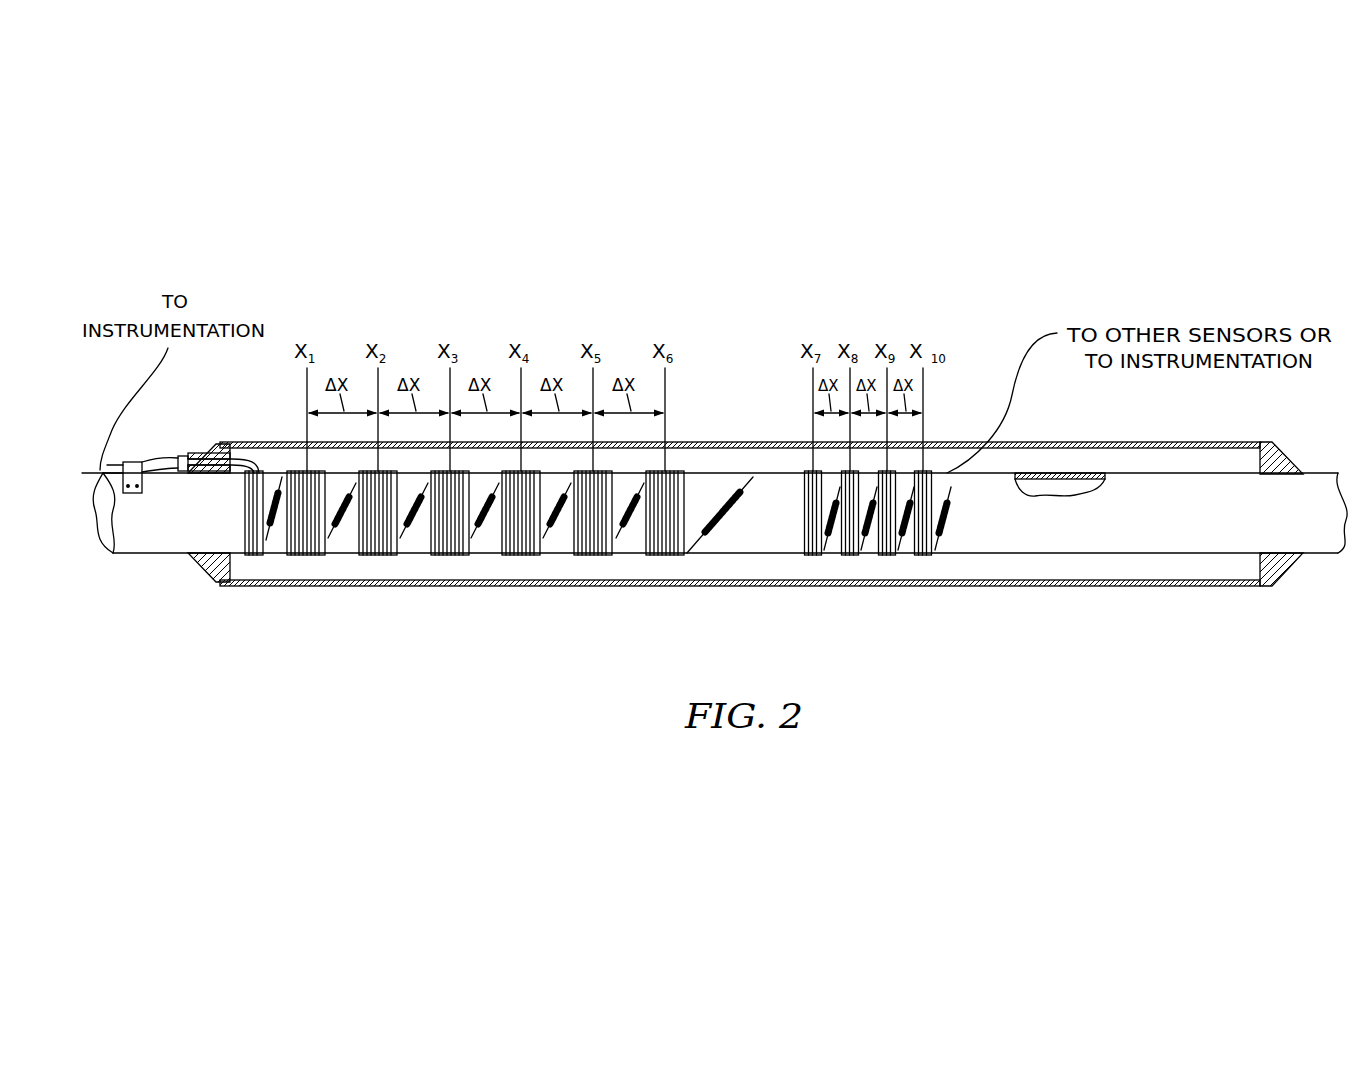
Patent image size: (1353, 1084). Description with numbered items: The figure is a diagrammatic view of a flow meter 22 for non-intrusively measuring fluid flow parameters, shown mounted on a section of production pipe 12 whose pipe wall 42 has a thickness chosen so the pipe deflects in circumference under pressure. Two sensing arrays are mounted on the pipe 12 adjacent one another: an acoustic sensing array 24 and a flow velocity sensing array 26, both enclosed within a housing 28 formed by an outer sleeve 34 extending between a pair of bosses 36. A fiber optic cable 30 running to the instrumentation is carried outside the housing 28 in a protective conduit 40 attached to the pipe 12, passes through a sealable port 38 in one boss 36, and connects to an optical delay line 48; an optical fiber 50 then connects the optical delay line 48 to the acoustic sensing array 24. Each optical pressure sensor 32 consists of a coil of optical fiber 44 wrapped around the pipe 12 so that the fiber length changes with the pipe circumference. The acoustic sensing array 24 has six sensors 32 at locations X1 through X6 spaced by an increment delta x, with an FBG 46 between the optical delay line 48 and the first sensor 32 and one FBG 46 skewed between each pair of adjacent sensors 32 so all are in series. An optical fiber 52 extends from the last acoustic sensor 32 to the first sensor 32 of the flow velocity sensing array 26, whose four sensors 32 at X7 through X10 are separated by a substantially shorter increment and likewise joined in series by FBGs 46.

The pipe 12 is at (115, 550).
The flow meter 22 is at (724, 342).
The acoustic sensing array 24 is at (460, 560).
The flow velocity sensing array 26 is at (870, 566).
The housing 28 is at (602, 590).
The fiber optic cable 30 is at (92, 470).
The optical pressure sensor 32 is at (363, 560).
The outer sleeve 34 is at (1058, 587).
The boss 36 is at (203, 577).
The sealable port 38 is at (188, 456).
The protective conduit 40 is at (165, 457).
The pipe wall 42 is at (1087, 477).
The coil of optical fiber 44 is at (373, 556).
The FBG 46 is at (272, 471).
The optical delay line 48 is at (253, 556).
The optical fiber 50 is at (275, 556).
The optical fiber 52 is at (693, 520).